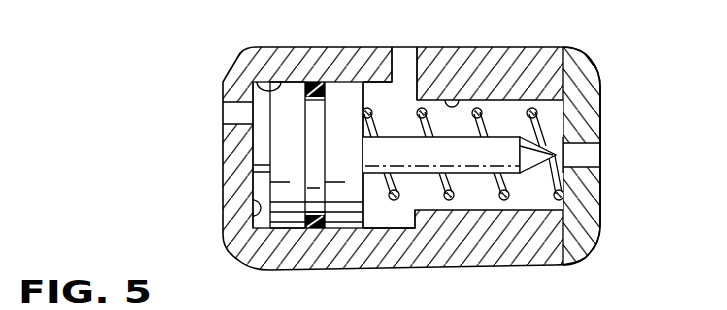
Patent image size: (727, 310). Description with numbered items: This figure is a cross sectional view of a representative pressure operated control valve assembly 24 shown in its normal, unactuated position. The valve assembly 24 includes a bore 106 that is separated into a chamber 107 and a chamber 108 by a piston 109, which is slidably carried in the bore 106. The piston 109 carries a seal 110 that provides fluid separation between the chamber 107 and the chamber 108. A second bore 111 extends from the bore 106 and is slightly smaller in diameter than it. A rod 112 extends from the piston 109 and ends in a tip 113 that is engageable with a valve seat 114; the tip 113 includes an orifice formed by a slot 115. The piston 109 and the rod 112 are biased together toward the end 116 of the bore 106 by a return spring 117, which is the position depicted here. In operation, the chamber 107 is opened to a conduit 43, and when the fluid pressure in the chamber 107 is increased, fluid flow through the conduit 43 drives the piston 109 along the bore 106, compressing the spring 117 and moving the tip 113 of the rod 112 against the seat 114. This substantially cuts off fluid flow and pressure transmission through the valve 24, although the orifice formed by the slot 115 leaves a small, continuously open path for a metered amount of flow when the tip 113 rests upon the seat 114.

The pressure operated control valve assembly 24 is at (586, 67).
The conduit 43 is at (235, 112).
The bore 106 is at (258, 88).
The chamber 107 is at (260, 189).
The chamber 108 is at (386, 218).
The piston 109 is at (278, 148).
The seal 110 is at (311, 82).
The bore 111 is at (450, 100).
The rod 112 is at (389, 130).
The tip 113 is at (528, 162).
The valve seat 114 is at (565, 167).
The slot 115 is at (549, 152).
The end of bore 116 is at (262, 214).
The return spring 117 is at (494, 103).